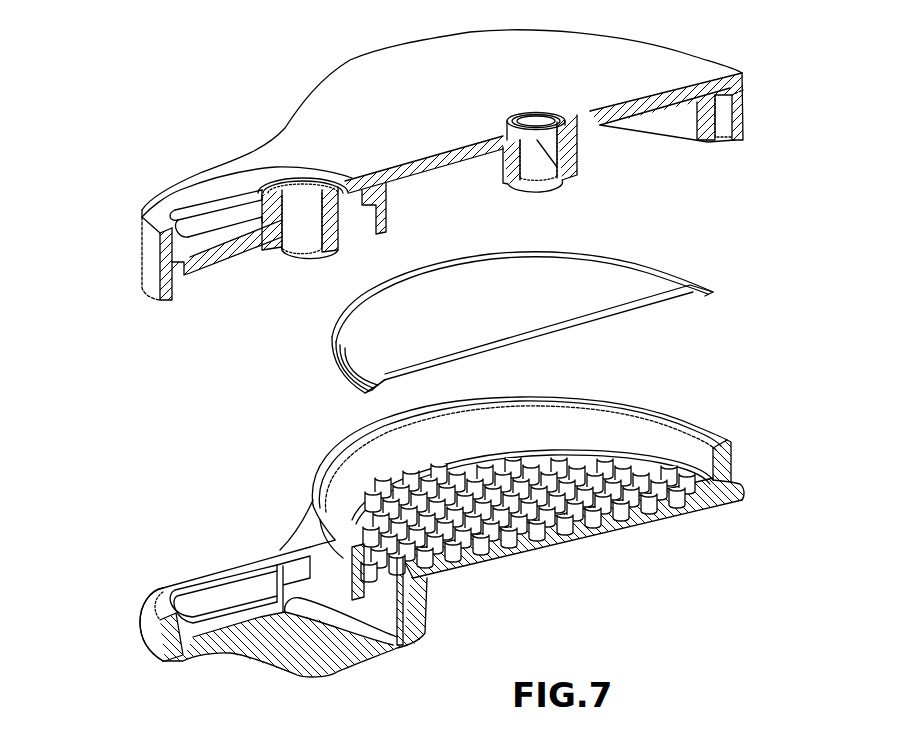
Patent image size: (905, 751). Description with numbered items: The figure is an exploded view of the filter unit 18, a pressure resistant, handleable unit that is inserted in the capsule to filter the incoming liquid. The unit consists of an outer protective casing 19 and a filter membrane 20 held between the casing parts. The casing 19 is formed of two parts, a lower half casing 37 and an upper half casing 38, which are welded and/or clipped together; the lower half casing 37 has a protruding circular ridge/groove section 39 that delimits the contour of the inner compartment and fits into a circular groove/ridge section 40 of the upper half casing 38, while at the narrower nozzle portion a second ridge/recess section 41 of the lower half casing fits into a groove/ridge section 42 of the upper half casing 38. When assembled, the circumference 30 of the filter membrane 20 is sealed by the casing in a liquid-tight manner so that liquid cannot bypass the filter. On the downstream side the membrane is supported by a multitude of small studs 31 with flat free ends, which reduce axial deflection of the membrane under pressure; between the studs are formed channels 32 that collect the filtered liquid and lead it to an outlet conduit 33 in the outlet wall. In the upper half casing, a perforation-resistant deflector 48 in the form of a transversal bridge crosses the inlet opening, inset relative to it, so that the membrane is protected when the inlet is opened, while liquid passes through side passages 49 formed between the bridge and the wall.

The filter unit 18 is at (190, 118).
The outer protective casing 19 is at (126, 248).
The filter membrane 20 is at (647, 281).
The circumference 30 is at (345, 347).
The studs 31 is at (600, 507).
The channels 32 is at (438, 585).
The outlet conduit 33 is at (400, 645).
The lower half casing 37 is at (757, 418).
The upper half casing 38 is at (752, 48).
The circular ridge/groove section 39 is at (700, 412).
The circular groove/ridge section 40 is at (745, 153).
The second ridge/recess section 41 is at (183, 578).
The groove/ridge section 42 is at (196, 308).
The perforation-resistant deflector 48 is at (582, 163).
The side passages 49 is at (557, 167).